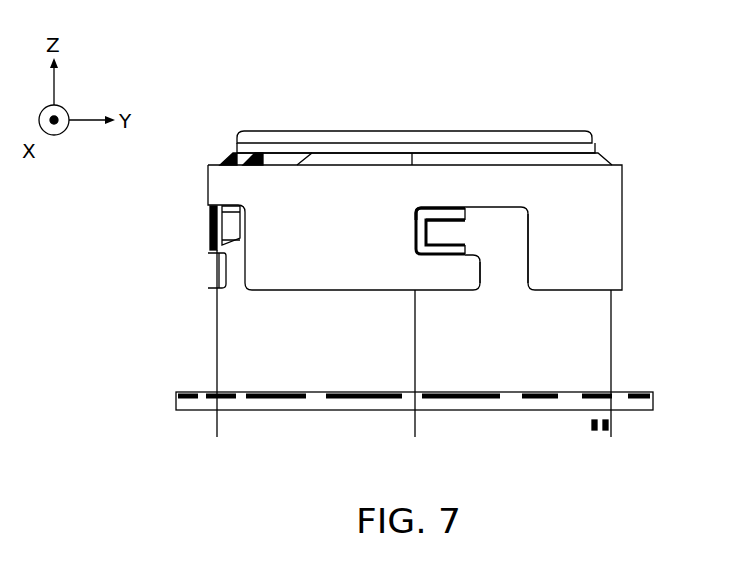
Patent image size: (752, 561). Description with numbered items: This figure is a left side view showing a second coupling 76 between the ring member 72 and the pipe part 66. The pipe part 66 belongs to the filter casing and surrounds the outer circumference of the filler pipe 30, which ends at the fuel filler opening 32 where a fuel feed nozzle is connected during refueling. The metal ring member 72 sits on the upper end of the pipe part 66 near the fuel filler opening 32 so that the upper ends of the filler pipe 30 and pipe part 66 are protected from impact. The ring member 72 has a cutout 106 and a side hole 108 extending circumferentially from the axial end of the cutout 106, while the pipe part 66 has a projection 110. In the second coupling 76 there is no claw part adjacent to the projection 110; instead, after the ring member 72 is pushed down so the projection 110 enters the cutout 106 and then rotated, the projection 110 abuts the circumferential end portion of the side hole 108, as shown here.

The filler pipe 30 is at (595, 150).
The fuel filler opening 32 is at (560, 131).
The ring member 72 is at (623, 203).
The second coupling 76 is at (396, 240).
The pipe part 66 is at (612, 352).
The cutout 106 is at (527, 255).
The side hole 108 is at (426, 234).
The projection 110 is at (442, 208).